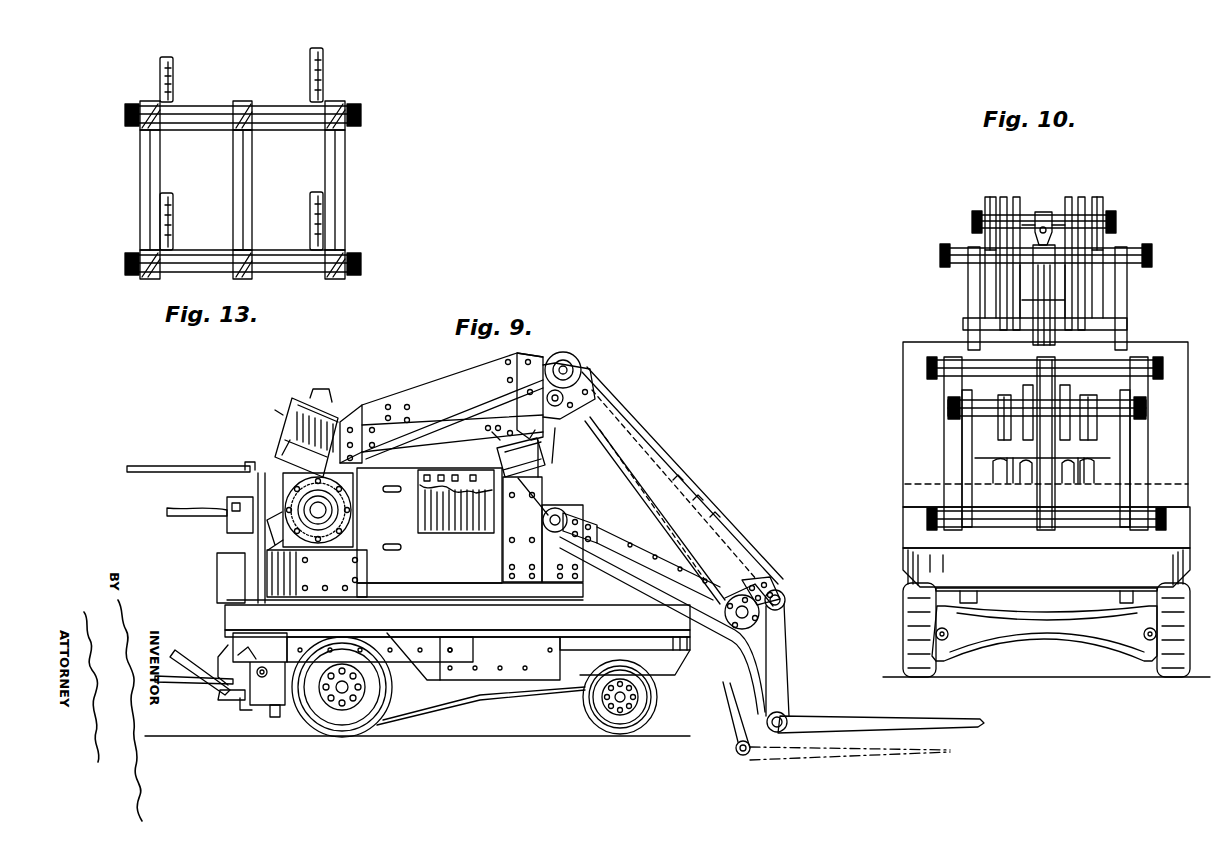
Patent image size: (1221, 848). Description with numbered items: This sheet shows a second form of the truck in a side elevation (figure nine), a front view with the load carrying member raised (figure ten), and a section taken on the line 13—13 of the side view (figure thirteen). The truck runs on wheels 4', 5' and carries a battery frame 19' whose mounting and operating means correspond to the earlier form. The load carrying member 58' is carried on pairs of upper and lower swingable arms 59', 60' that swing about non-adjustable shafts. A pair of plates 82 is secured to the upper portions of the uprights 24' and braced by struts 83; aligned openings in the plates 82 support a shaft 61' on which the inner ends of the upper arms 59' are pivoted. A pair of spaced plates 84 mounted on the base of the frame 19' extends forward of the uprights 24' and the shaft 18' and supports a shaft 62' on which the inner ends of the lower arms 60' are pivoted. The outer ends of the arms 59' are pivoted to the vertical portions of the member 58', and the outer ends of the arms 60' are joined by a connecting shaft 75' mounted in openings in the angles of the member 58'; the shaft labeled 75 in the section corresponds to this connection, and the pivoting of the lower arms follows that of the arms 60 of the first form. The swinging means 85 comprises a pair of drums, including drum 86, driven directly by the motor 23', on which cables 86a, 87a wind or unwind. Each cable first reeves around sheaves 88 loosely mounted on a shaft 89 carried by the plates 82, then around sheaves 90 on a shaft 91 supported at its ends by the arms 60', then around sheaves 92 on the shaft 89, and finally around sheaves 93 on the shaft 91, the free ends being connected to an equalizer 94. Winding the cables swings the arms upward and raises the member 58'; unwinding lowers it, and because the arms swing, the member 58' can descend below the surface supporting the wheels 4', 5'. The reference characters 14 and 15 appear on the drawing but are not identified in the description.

In FIG. 9, the wheel 4' is at (349, 701).
In FIG. 9, the wheel 5' is at (620, 710).
In FIG. 10, the wheel 5' is at (1046, 643).
In FIG. 9, the section line 13 is at (773, 770).
In FIG. 9, the battery box / direction arrow 14 is at (500, 512).
In FIG. 9, the chain 15 is at (630, 371).
In FIG. 10, the shaft 18' is at (1108, 445).
In FIG. 9, the battery frame 19' is at (470, 535).
In FIG. 9, the motor 23' is at (289, 433).
In FIG. 9, the uprights 24' is at (538, 472).
In FIG. 13, the load carrying member 58' is at (260, 190).
In FIG. 9, the load carrying member 58' is at (793, 660).
In FIG. 10, the load carrying member 58' is at (1054, 443).
In FIG. 13, the upper arms 59' is at (263, 74).
In FIG. 9, the upper arms 59' is at (682, 486).
In FIG. 10, the upper arms 59' is at (1023, 290).
In FIG. 10, the arms 60 is at (1148, 458).
In FIG. 13, the lower arms 60' is at (241, 216).
In FIG. 9, the lower arms 60' is at (662, 625).
In FIG. 10, the lower arms 60' is at (945, 458).
In FIG. 9, the shaft 61' is at (553, 448).
In FIG. 10, the shaft 61' is at (1056, 294).
In FIG. 9, the shaft 62' is at (578, 515).
In FIG. 13, the bolt 75 is at (262, 190).
In FIG. 10, the bolt 75 is at (1015, 523).
In FIG. 9, the connecting shaft 75' is at (853, 721).
In FIG. 9, the plates 82 is at (532, 375).
In FIG. 9, the struts 83 is at (453, 438).
In FIG. 9, the spaced plates 84 is at (548, 555).
In FIG. 9, the swinging means 85 is at (641, 556).
In FIG. 10, the swinging means 85 is at (1068, 291).
In FIG. 9, the drum 86 is at (355, 510).
In FIG. 9, the cable 86a is at (388, 449).
In FIG. 10, the cable 86a is at (968, 285).
In FIG. 10, the cable 87a is at (1127, 290).
In FIG. 9, the sheaves 88 is at (577, 360).
In FIG. 10, the sheaves 88 is at (1113, 195).
In FIG. 9, the shaft 89 is at (565, 387).
In FIG. 10, the sheaves 90 is at (1140, 415).
In FIG. 9, the shaft 91 is at (735, 627).
In FIG. 10, the sheaves 92 is at (1080, 197).
In FIG. 10, the sheaves 93 is at (1027, 450).
In FIG. 10, the equalizer 94 is at (1043, 210).